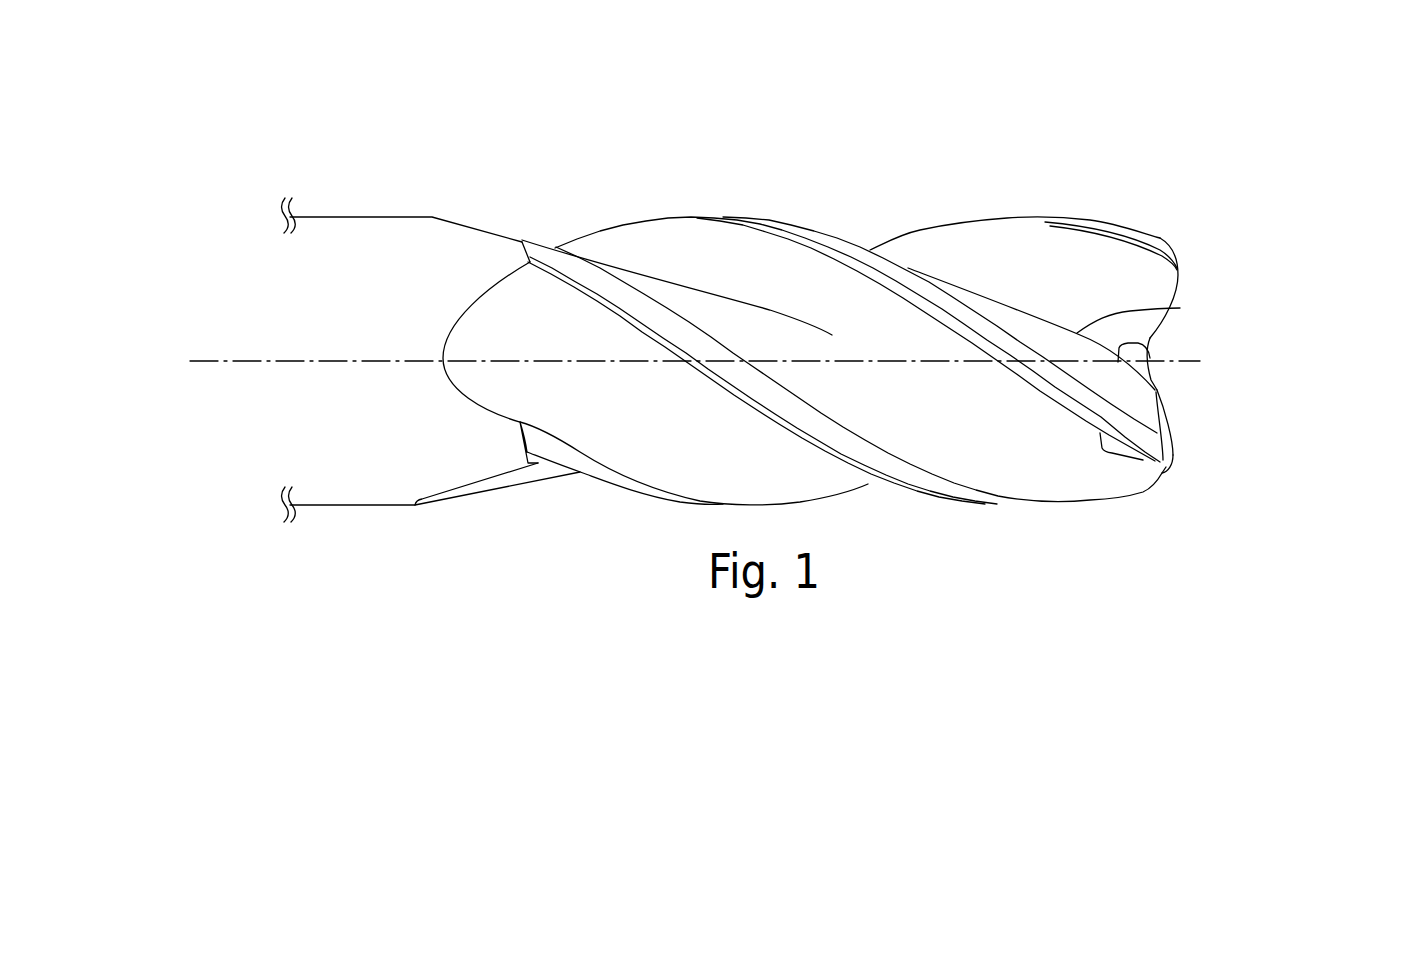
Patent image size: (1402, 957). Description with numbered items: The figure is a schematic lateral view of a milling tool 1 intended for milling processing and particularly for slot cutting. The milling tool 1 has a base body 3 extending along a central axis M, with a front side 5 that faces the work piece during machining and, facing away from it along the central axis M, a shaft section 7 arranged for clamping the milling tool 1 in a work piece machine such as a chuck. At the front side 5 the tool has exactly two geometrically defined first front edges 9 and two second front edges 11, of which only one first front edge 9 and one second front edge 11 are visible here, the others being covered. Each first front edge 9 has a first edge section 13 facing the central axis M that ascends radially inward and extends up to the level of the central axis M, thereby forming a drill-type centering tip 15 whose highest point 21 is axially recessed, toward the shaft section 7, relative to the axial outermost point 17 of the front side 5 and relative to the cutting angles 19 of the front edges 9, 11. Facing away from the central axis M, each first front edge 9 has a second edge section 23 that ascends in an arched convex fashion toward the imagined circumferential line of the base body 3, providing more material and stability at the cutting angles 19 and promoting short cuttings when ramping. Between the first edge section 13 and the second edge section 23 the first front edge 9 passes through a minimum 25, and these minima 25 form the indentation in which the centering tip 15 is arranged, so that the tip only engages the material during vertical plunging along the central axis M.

The milling tool 1 is at (912, 98).
The base body 3 is at (721, 192).
The front side 5 is at (1284, 375).
The shaft section 7 is at (320, 508).
The first front edge 9 is at (1203, 267).
The second front edge 11 is at (1190, 439).
The first edge section 13 is at (1154, 341).
The centering tip 15 is at (1168, 382).
The axial outermost point 17 is at (1178, 260).
The cutting angle 19 is at (1164, 267).
The highest point 21 is at (1151, 356).
The second edge section 23 is at (1180, 308).
The minimum 25 is at (1146, 342).
The central axis M is at (237, 358).